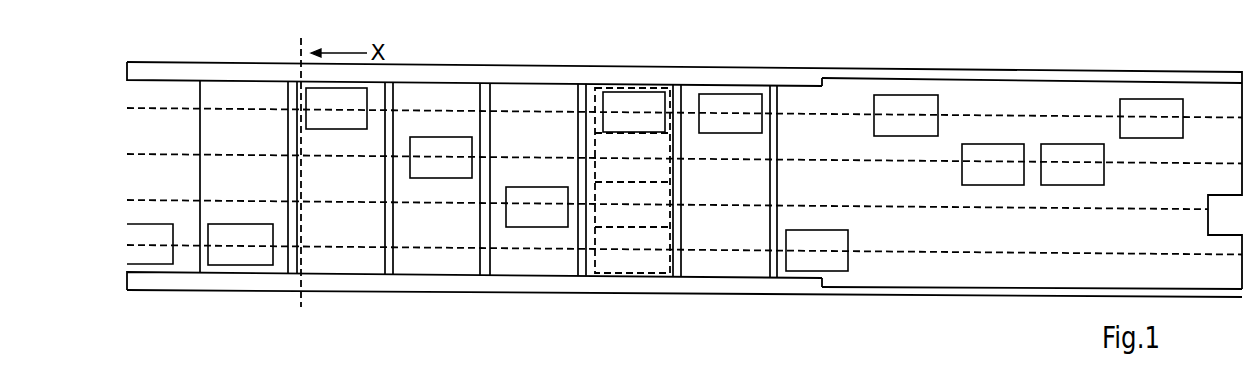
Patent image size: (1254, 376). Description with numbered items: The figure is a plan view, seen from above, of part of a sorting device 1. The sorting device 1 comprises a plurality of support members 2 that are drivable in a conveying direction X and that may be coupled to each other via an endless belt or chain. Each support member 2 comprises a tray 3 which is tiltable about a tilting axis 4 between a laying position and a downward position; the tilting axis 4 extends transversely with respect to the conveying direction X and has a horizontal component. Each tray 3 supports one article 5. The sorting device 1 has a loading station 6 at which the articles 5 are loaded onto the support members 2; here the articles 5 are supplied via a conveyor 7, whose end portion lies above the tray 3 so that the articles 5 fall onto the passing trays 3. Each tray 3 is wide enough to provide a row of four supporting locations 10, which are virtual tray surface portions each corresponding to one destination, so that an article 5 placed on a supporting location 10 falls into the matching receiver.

The sorting device 1 is at (449, 66).
The support member 2 is at (505, 97).
The tray 3 is at (522, 95).
The tilting axis 4 is at (302, 60).
The article 5 is at (433, 140).
The loading station 6 is at (767, 55).
The conveyor 7 is at (976, 87).
The supporting location 10 is at (596, 256).